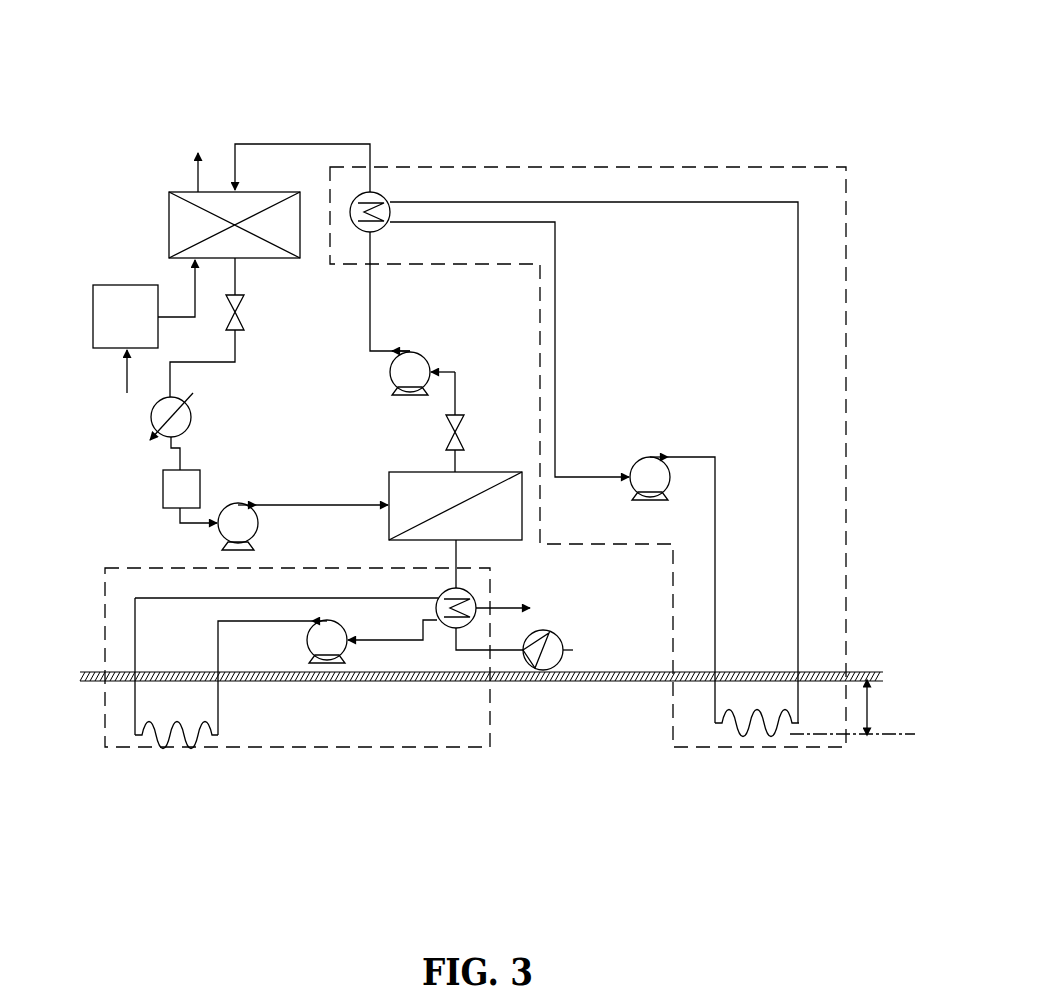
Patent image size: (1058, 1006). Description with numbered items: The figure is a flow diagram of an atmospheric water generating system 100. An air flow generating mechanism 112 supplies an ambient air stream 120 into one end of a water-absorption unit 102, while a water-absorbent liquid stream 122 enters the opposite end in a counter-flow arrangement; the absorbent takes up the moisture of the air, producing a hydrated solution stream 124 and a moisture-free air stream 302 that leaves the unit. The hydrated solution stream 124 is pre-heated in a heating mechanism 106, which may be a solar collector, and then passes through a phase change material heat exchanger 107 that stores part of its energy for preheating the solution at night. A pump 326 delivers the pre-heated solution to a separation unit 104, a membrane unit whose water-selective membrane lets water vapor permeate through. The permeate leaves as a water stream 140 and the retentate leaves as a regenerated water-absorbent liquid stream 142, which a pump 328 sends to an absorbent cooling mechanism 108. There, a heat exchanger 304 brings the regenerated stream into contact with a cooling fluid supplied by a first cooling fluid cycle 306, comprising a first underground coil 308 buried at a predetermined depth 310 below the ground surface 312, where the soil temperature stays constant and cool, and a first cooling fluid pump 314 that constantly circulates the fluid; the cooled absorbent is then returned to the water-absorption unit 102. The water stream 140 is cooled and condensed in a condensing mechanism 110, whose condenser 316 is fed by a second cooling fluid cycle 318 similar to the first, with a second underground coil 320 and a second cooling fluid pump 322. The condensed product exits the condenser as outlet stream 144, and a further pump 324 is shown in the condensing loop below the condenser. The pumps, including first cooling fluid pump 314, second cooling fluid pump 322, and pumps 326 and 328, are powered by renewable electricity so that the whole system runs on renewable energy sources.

The atmospheric water generating system 100 is at (716, 66).
The water-absorption unit 102 is at (169, 210).
The separation unit 104 is at (389, 485).
The heating mechanism 106 is at (152, 420).
The phase change material heat exchanger 107 is at (163, 490).
The absorbent cooling mechanism 108 is at (614, 167).
The condensing mechanism 110 is at (303, 747).
The air flow generating mechanism 112 is at (125, 339).
The ambient air stream 120 is at (192, 290).
The water-absorbent liquid stream 122 is at (307, 130).
The hydrated solution stream 124 is at (235, 346).
The water stream 140 is at (457, 552).
The regenerated water-absorbent liquid stream 142 is at (370, 317).
The outlet line 144 is at (518, 606).
The moisture-free air stream 302 is at (195, 167).
The heat exchanger 304 is at (381, 197).
The first cooling fluid cycle 306 is at (742, 190).
The first underground coil 308 is at (732, 728).
The predetermined depth 310 is at (875, 710).
The ground surface 312 is at (860, 672).
The first cooling fluid pump 314 is at (645, 456).
The condenser 316 is at (447, 630).
The second cooling fluid cycle 318 is at (125, 615).
The second underground coil 320 is at (140, 742).
The second cooling fluid pump 322 is at (328, 620).
The pump 324 is at (550, 653).
The pump 326 is at (228, 503).
The pump 328 is at (392, 372).